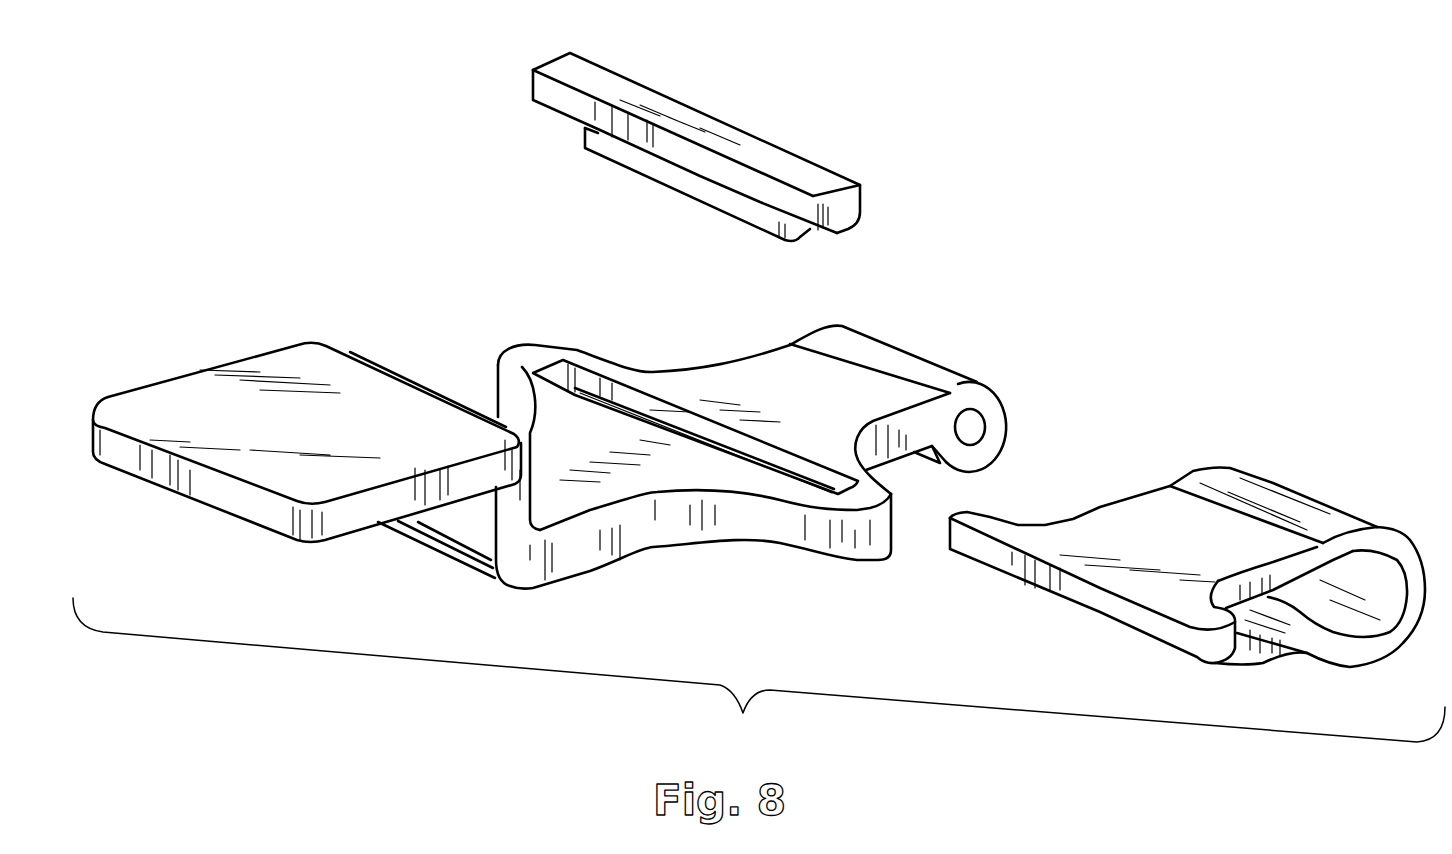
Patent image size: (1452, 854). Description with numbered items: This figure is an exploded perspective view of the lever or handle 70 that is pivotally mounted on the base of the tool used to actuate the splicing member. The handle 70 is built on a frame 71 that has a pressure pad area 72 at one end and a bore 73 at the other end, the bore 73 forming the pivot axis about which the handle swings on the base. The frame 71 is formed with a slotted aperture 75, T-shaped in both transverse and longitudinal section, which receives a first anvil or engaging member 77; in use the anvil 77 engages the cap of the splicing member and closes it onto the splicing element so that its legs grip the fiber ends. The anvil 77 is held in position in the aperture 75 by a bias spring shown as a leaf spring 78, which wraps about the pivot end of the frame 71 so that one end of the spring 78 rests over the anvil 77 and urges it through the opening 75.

The lever or handle 70 is at (1076, 220).
The frame 71 is at (653, 517).
The pressure pad area 72 is at (401, 431).
The bore 73 is at (973, 428).
The slotted aperture 75 is at (623, 397).
The anvil or engaging member 77 is at (768, 157).
The leaf spring 78 is at (1183, 541).